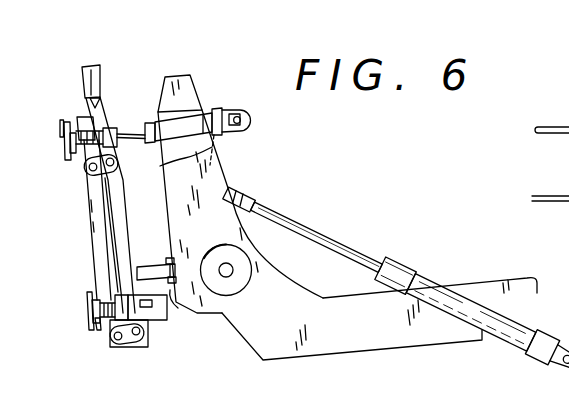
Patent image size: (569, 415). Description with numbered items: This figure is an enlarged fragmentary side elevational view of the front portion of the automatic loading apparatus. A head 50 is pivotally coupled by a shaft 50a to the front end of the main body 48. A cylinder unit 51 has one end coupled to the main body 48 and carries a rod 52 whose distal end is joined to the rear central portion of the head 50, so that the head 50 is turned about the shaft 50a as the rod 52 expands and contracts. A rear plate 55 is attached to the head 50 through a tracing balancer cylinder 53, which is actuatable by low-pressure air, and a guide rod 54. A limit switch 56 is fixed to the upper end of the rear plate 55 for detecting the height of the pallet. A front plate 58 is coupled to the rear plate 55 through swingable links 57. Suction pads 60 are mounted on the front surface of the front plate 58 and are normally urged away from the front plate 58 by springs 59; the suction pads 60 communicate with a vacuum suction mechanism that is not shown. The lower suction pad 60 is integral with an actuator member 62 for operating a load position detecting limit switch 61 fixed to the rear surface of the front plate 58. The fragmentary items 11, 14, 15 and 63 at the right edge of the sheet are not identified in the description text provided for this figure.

The frame 11 is at (567, 123).
The roller 14 is at (552, 143).
The belt 15 is at (550, 178).
The main body 48 is at (327, 343).
The head 50 is at (212, 182).
The shaft 50a is at (229, 271).
The cylinder unit 51 is at (398, 272).
The rod 52 is at (327, 240).
The tracing balancer cylinder 53 is at (178, 125).
The guide rod 54 is at (158, 277).
The rear plate 55 is at (105, 108).
The limit switch 56 is at (95, 67).
The swingable links 57 is at (97, 175).
The front plate 58 is at (95, 228).
The springs 59 is at (72, 123).
The suction pads 60 is at (62, 137).
The load position detecting limit switch 61 is at (160, 305).
The actuator member 62 is at (140, 290).
The guide 63 is at (545, 201).